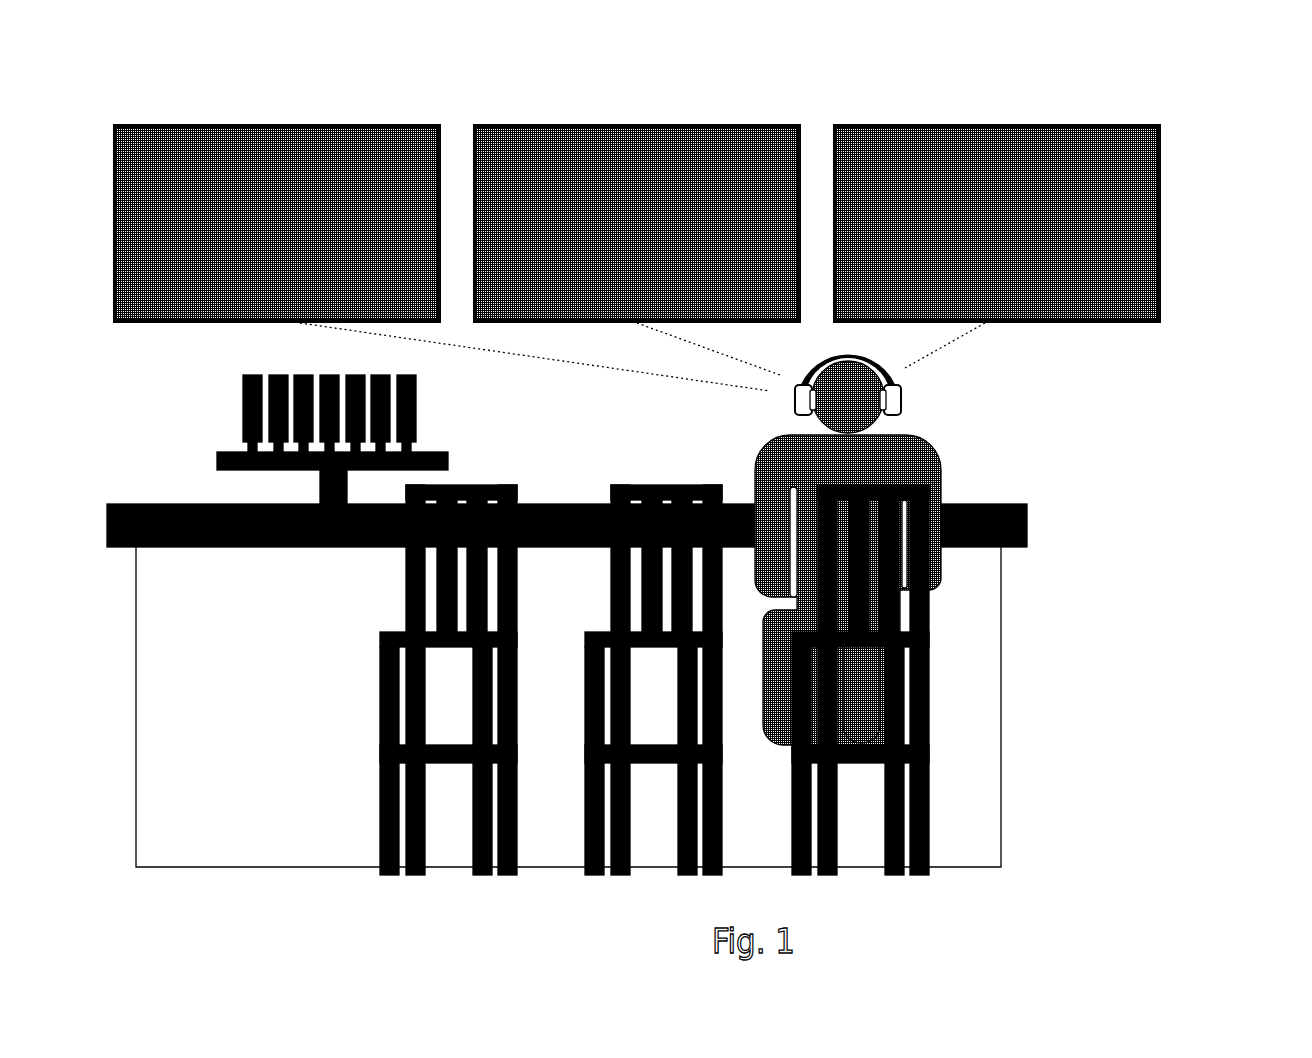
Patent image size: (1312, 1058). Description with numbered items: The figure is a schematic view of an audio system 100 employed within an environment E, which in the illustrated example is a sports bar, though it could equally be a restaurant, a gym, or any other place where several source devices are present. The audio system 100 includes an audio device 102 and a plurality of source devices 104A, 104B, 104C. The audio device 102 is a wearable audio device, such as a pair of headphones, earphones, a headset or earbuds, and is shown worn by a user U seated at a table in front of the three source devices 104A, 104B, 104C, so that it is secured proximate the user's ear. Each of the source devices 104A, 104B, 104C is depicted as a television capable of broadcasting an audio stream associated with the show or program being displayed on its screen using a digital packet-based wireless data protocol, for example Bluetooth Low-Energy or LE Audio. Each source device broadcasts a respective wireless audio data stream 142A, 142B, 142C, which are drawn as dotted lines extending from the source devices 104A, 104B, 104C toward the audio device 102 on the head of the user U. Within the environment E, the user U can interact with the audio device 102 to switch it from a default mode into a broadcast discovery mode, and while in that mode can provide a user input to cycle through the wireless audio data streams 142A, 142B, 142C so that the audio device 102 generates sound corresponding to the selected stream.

The audio system 100 is at (1179, 96).
The audio device 102 is at (790, 395).
The source device 104A is at (305, 236).
The source device 104B is at (664, 236).
The source device 104C is at (1024, 236).
The wireless audio data stream 142A is at (635, 373).
The wireless audio data stream 142B is at (722, 351).
The wireless audio data stream 142C is at (935, 355).
The user U is at (940, 468).
The environment E is at (1119, 587).